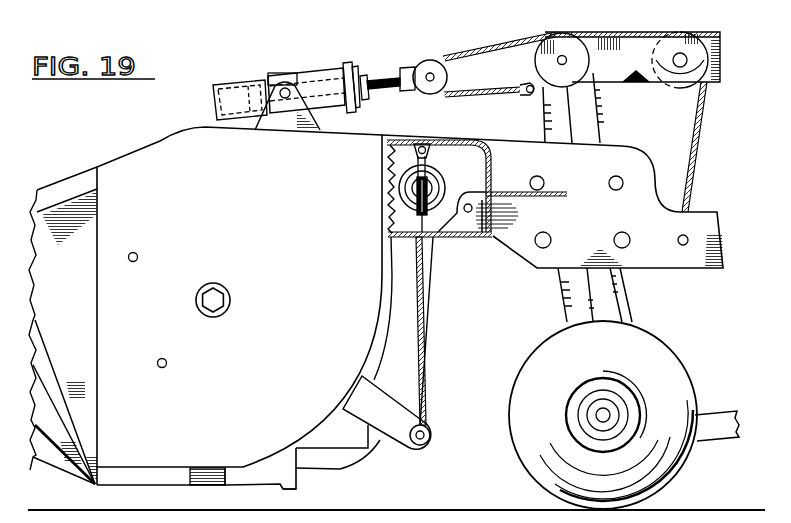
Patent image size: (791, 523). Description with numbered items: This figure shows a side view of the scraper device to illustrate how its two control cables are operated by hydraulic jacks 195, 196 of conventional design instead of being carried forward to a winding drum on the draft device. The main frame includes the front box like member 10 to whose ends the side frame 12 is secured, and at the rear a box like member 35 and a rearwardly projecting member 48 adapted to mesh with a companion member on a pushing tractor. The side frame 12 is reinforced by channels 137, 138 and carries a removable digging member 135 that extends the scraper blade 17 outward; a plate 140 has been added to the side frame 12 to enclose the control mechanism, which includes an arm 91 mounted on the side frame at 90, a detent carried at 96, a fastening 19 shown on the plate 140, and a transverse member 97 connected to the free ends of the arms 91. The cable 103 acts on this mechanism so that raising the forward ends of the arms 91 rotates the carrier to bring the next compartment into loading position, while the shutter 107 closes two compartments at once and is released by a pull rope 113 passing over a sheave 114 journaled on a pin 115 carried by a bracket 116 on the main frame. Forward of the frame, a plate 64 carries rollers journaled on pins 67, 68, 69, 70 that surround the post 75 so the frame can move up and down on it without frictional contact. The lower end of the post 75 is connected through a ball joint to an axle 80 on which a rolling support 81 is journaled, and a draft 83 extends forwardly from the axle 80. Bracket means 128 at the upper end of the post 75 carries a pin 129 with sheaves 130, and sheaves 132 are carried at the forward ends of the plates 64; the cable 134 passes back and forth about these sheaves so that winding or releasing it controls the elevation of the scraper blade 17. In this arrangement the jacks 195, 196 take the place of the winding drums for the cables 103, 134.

The front box like member 10 is at (470, 159).
The side frame 12 is at (80, 273).
The scraper blade 17 is at (306, 488).
The hex nut 19 is at (215, 300).
The box like member 35 is at (50, 409).
The rearwardly projecting member 48 is at (73, 472).
The plate 64 is at (705, 226).
The pin 67 is at (540, 181).
The pin 68 is at (619, 181).
The pin 69 is at (546, 238).
The pin 70 is at (625, 238).
The post 75 is at (551, 128).
The axle 80 is at (600, 414).
The rolling support 81 is at (621, 350).
The draft 83 is at (713, 425).
The mounting 90 is at (137, 255).
The arm 91 is at (400, 421).
The mounting 96 is at (166, 361).
The member 97 is at (431, 435).
The cable 103 is at (428, 343).
The shutter 107 is at (324, 470).
The pull rope 113 is at (424, 324).
The sheave 114 is at (452, 238).
The pin 115 is at (467, 214).
The bracket 116 is at (479, 238).
The bracket means 128 is at (712, 43).
The pin 129 is at (682, 53).
The sheave 130 is at (682, 86).
The sheave 132 is at (562, 55).
The cable 134 is at (477, 52).
The digging member 135 is at (262, 484).
The channel 137 is at (50, 189).
The channel 138 is at (50, 350).
The plate 140 is at (318, 207).
The hydraulic jack 195 is at (236, 92).
The hydraulic jack 196 is at (412, 189).